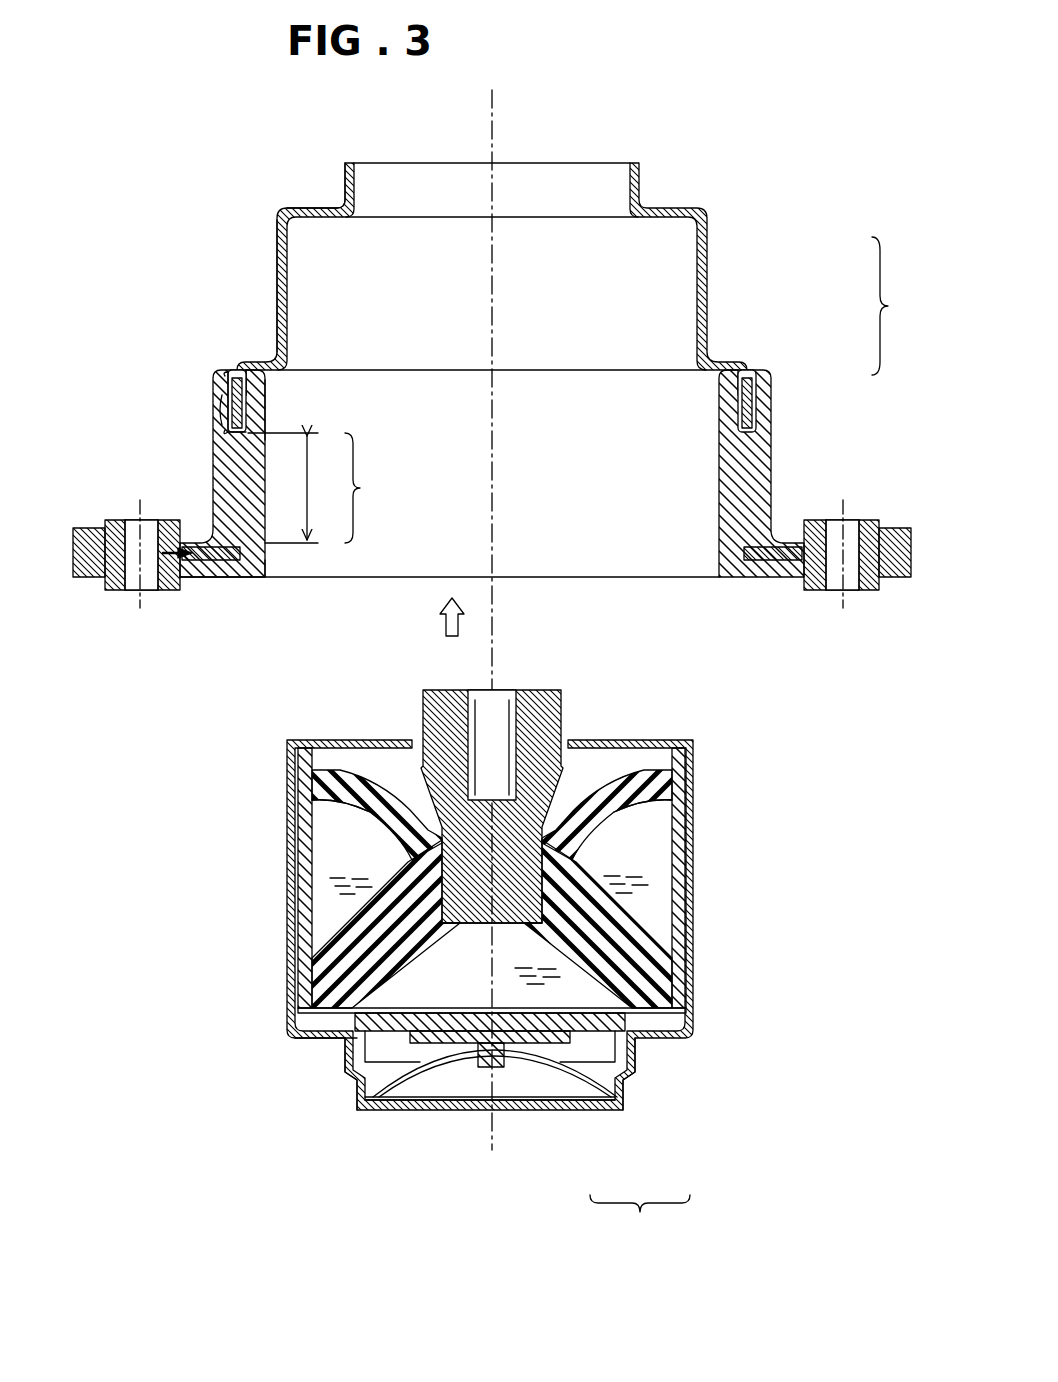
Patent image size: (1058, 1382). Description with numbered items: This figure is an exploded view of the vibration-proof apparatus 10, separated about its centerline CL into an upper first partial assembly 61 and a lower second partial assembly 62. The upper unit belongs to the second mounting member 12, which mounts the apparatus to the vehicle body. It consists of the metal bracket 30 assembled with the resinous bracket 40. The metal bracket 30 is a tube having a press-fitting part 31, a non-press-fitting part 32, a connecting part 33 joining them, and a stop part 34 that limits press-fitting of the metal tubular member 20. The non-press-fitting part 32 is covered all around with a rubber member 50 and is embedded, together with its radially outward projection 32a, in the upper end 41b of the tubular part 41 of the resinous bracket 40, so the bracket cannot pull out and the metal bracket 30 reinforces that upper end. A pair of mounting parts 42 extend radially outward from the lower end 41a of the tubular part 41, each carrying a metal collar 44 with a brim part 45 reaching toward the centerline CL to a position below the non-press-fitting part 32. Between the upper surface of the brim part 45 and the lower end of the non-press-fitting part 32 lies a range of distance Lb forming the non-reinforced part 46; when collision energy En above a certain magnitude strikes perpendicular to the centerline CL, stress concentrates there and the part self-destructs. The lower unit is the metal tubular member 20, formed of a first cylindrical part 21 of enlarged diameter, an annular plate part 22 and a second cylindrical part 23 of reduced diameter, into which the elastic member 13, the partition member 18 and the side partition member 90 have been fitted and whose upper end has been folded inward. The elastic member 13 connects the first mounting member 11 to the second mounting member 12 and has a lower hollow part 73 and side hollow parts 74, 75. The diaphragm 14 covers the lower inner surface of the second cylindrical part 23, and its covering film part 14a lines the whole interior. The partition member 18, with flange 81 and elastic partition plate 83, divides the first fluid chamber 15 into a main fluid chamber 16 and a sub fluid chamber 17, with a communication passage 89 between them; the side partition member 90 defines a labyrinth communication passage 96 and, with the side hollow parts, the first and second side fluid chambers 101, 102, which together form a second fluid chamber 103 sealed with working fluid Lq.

The vibration-proof apparatus 10 is at (878, 152).
The first mounting member 11 is at (535, 705).
The second mounting member 12 is at (491, 650).
The elastic member 13 is at (625, 772).
The diaphragm 14 is at (473, 982).
The covering film part 14a is at (316, 947).
The first fluid chamber 15 is at (527, 1146).
The main fluid chamber 16 is at (606, 1090).
The sub fluid chamber 17 is at (580, 1100).
The partition member 18 is at (542, 1100).
The metal tubular member 20 is at (698, 790).
The first cylindrical part 21 is at (293, 990).
The annular plate part 22 is at (308, 1034).
The second cylindrical part 23 is at (352, 1070).
The metal bracket 30 is at (519, 265).
The press-fitting part 31 is at (280, 262).
The non-press-fitting part 32 is at (250, 385).
The projection 32a is at (228, 431).
The connecting part 33 is at (237, 370).
The stop part 34 is at (322, 196).
The resinous bracket 40 is at (491, 451).
The tubular part 41 is at (489, 496).
The lower end of the tubular part 41a is at (262, 575).
The upper end of the tubular part 41b is at (262, 422).
The mounting part 42 is at (86, 530).
The metal collar 44 is at (108, 583).
The brim part 45 is at (212, 562).
The non-reinforced part 46 is at (324, 488).
The rubber member 50 is at (232, 412).
The first partial assembly 61 is at (491, 400).
The second partial assembly 62 is at (818, 1180).
The lower hollow part 73 is at (424, 946).
The first side hollow part 74 is at (640, 830).
The second side hollow part 75 is at (330, 800).
The flange 81 is at (338, 1036).
The elastic partition plate 83 is at (490, 1077).
The communication passage 89 is at (616, 1045).
The side partition member 90 is at (652, 955).
The communication passage 96 is at (654, 998).
The first side fluid chamber 101 is at (626, 858).
The second side fluid chamber 102 is at (352, 853).
The second fluid chamber 103 is at (486, 837).
The working fluid Lq is at (338, 885).
The distance Lb is at (320, 488).
The collision energy En is at (168, 606).
The centerline CL is at (498, 118).